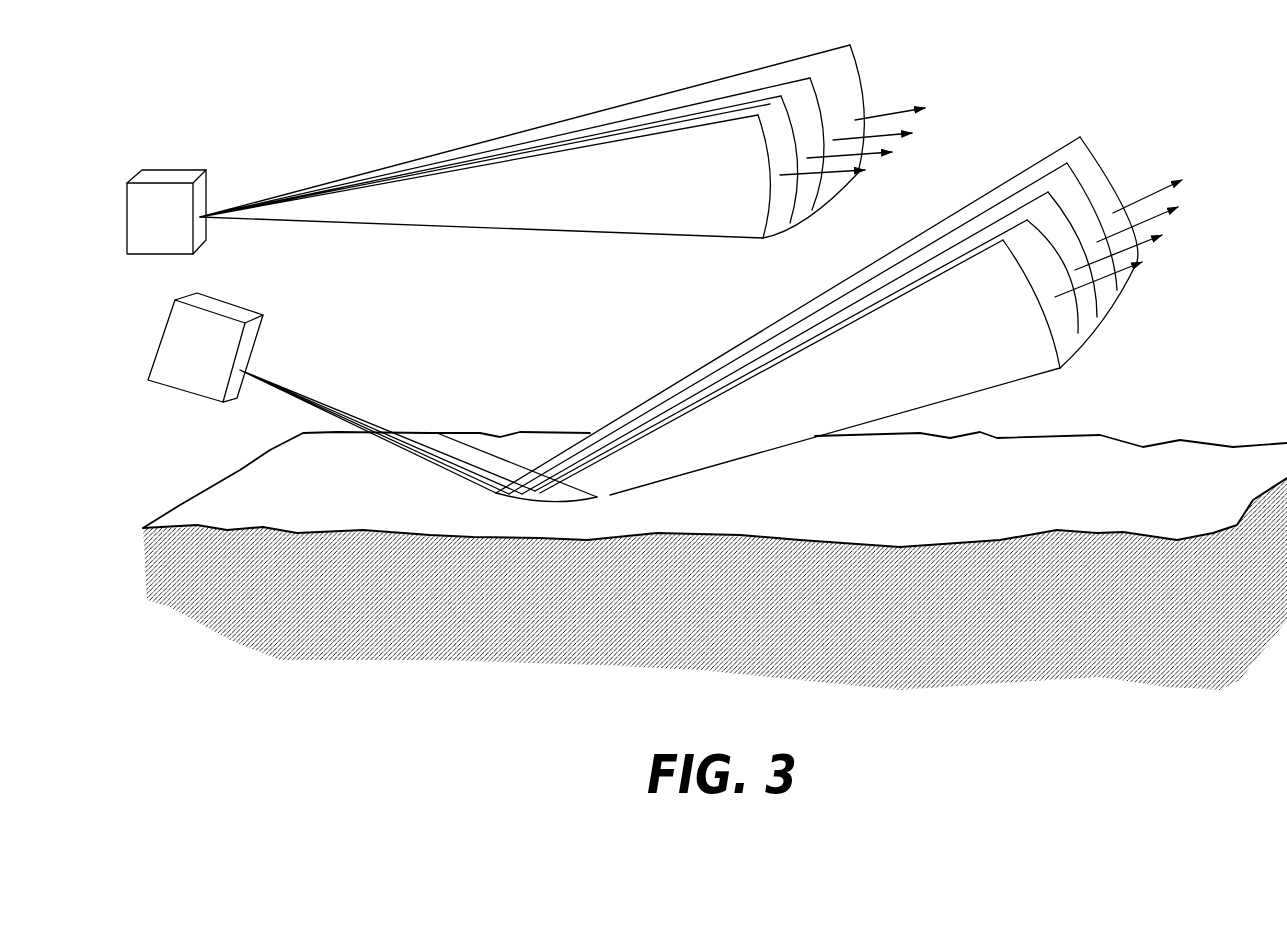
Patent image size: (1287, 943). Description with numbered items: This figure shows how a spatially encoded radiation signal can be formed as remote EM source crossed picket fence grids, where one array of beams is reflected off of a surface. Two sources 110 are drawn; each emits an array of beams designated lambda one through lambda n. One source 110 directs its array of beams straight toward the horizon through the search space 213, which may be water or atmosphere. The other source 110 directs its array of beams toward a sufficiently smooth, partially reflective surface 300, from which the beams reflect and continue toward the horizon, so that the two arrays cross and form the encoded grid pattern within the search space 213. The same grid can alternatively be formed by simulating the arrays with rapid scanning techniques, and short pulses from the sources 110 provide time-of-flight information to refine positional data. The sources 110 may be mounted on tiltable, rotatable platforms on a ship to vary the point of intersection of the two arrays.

The sources 110 is at (186, 178).
The search space 213 is at (551, 325).
The partially reflective surface 300 is at (972, 502).